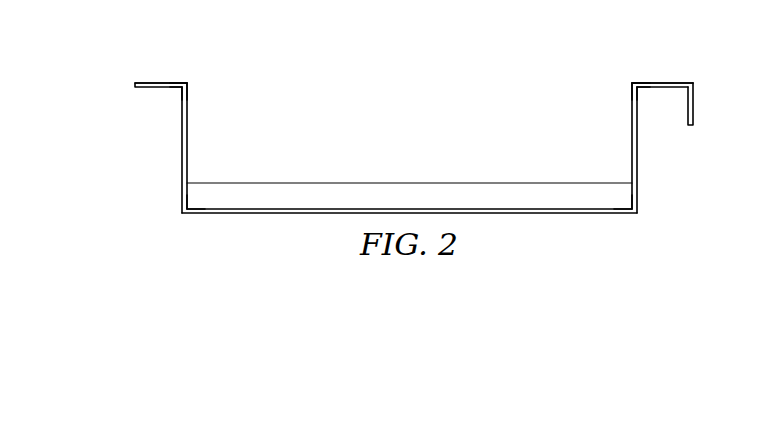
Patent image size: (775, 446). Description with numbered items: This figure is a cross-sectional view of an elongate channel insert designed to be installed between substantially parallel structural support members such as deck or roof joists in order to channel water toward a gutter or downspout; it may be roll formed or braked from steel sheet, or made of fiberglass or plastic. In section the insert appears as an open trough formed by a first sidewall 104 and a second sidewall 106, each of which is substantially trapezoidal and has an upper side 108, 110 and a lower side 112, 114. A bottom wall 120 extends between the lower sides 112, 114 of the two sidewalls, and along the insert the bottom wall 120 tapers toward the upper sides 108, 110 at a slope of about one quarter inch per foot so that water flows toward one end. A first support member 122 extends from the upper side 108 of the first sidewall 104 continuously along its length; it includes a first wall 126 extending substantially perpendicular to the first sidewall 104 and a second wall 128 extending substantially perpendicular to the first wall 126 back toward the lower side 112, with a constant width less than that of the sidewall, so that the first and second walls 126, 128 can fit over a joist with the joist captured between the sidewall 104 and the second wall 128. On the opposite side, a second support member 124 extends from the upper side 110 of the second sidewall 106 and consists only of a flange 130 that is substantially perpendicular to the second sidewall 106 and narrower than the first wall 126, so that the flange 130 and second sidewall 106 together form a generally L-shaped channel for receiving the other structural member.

The first sidewall 104 is at (638, 150).
The second sidewall 106 is at (182, 150).
The upper side of first sidewall 108 is at (631, 83).
The upper side of second sidewall 110 is at (188, 83).
The lower side of first sidewall 112 is at (630, 207).
The lower side of second sidewall 114 is at (190, 206).
The bottom wall 120 is at (291, 214).
The first support member 122 is at (641, 63).
The second support member 124 is at (148, 66).
The first wall 126 is at (665, 83).
The second wall 128 is at (694, 100).
The flange 130 is at (160, 88).